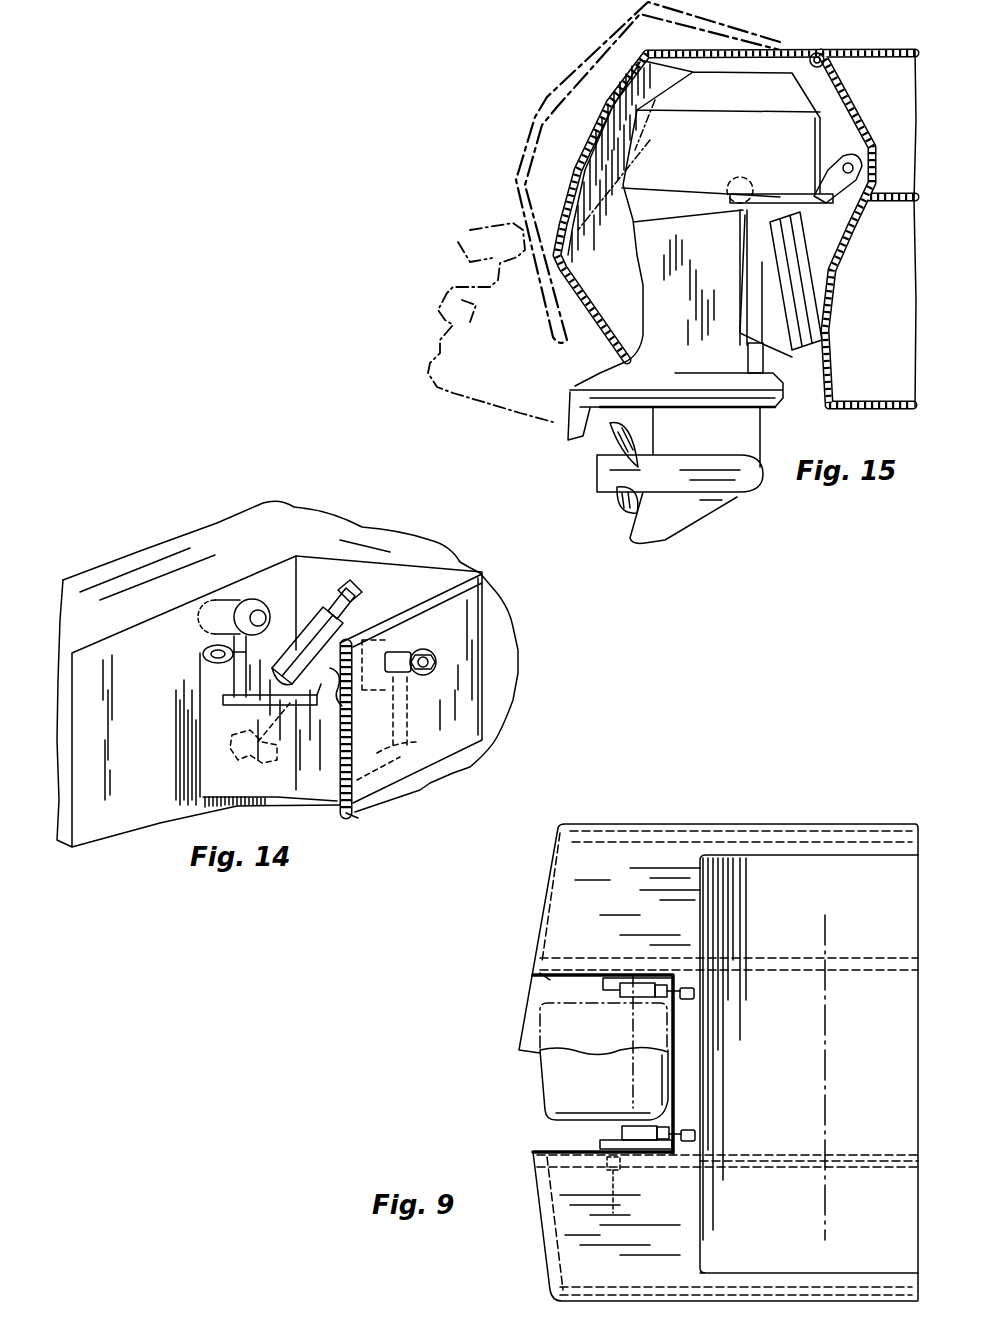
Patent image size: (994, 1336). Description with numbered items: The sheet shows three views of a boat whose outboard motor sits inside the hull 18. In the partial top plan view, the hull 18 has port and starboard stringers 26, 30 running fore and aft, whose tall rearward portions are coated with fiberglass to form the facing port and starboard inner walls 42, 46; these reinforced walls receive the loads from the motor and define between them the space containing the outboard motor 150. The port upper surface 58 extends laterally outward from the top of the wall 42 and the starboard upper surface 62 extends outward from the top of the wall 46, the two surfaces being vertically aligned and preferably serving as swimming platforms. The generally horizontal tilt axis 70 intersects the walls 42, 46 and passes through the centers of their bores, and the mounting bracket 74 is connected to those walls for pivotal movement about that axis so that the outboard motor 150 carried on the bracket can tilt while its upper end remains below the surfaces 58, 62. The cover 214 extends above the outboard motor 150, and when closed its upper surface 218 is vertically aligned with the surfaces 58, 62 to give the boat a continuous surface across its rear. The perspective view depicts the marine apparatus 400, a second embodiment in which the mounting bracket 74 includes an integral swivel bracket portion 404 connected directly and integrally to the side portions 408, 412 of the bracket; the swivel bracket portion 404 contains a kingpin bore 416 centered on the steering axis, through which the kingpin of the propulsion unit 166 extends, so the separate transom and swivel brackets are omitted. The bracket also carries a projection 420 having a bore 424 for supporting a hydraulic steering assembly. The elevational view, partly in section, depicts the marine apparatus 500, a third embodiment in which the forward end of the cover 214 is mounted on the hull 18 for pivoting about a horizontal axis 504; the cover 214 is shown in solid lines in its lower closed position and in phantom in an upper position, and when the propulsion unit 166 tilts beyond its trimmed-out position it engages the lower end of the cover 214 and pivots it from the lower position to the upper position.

In FIG. 15, the hull 18 is at (884, 293).
In FIG. 9, the first or port stringer 26 is at (770, 962).
In FIG. 9, the second or starboard stringer 30 is at (760, 1158).
In FIG. 9, the first or port inner wall 42 is at (532, 985).
In FIG. 9, the second or starboard inner wall 46 is at (533, 1149).
In FIG. 9, the first or port upper surface 58 is at (575, 876).
In FIG. 9, the second or starboard upper surface 62 is at (575, 1252).
In FIG. 9, the tilt axis 70 is at (616, 1210).
In FIG. 14, the mounting bracket 74 is at (200, 800).
In FIG. 9, the outboard motor 150 is at (549, 1048).
In FIG. 15, the propulsion unit 166 is at (641, 271).
In FIG. 15, the cover 214 is at (606, 116).
In FIG. 9, the cover 214 is at (540, 1000).
In FIG. 9, the upper surface of the cover 218 is at (578, 977).
In FIG. 14, the marine apparatus 400 is at (287, 653).
In FIG. 14, the integral swivel bracket portion 404 is at (200, 737).
In FIG. 14, the side portion 408 is at (330, 608).
In FIG. 14, the side portion 412 is at (410, 744).
In FIG. 14, the kingpin bore 416 is at (202, 650).
In FIG. 14, the projection 420 is at (362, 640).
In FIG. 14, the bore 424 is at (346, 710).
In FIG. 15, the marine apparatus 500 is at (616, 172).
In FIG. 15, the horizontal axis 504 is at (818, 52).